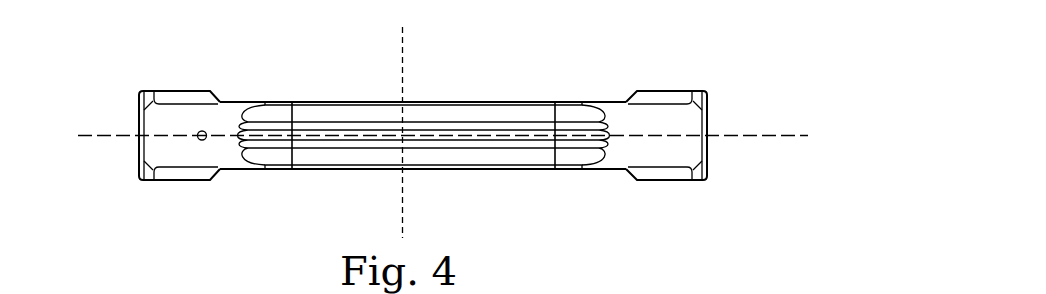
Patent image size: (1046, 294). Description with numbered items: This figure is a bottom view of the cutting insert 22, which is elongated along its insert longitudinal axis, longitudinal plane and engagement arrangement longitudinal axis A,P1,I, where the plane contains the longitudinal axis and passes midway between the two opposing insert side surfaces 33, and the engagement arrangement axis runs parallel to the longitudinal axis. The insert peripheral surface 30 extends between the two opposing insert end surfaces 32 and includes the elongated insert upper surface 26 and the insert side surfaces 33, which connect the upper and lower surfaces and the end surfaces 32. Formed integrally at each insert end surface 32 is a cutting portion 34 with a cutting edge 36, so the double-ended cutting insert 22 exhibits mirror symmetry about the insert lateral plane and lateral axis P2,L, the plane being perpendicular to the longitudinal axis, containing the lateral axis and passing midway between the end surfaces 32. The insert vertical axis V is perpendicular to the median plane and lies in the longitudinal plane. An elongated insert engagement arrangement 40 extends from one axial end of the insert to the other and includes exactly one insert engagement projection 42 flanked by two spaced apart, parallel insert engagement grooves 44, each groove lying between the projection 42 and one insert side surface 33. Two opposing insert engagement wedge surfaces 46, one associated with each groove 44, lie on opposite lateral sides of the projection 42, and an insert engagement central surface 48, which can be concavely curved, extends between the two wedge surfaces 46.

The cutting insert 22 is at (206, 56).
The insert upper surface 26 is at (612, 118).
The insert peripheral surface 30 is at (512, 105).
The insert end surfaces 32 is at (137, 128).
The insert side surfaces 33 is at (300, 101).
The cutting portion 34 is at (130, 73).
The cutting edge 36 is at (137, 150).
The insert engagement arrangement 40 is at (525, 167).
The insert engagement projection 42 is at (359, 118).
The insert engagement grooves 44 is at (363, 150).
The insert engagement wedge surfaces 46 is at (454, 118).
The insert engagement central surface 48 is at (462, 136).
The insert vertical axis V is at (407, 135).
The insert lateral plane and insert lateral axis P2,L is at (401, 40).
The insert longitudinal axis, insert longitudinal plane and insert engagement arrang A,P1,I is at (785, 133).